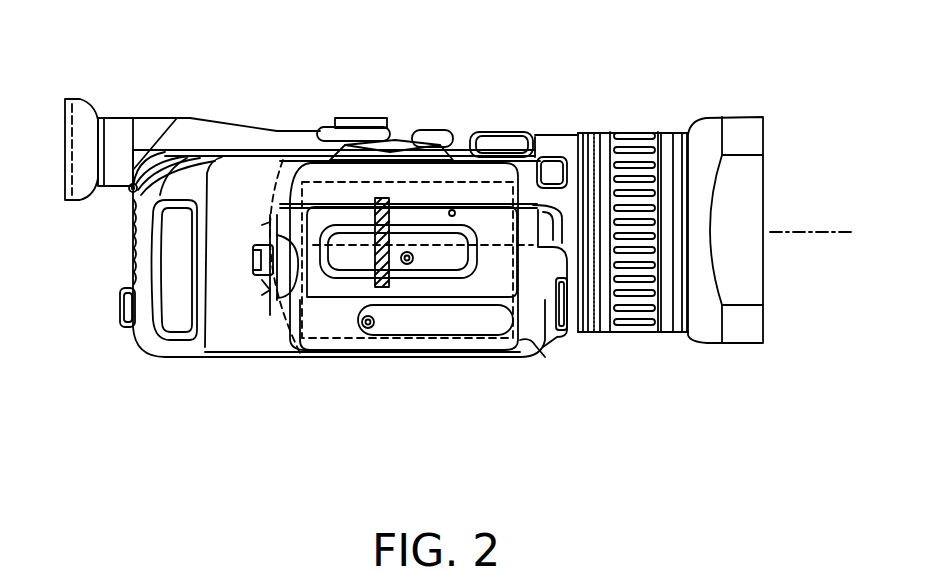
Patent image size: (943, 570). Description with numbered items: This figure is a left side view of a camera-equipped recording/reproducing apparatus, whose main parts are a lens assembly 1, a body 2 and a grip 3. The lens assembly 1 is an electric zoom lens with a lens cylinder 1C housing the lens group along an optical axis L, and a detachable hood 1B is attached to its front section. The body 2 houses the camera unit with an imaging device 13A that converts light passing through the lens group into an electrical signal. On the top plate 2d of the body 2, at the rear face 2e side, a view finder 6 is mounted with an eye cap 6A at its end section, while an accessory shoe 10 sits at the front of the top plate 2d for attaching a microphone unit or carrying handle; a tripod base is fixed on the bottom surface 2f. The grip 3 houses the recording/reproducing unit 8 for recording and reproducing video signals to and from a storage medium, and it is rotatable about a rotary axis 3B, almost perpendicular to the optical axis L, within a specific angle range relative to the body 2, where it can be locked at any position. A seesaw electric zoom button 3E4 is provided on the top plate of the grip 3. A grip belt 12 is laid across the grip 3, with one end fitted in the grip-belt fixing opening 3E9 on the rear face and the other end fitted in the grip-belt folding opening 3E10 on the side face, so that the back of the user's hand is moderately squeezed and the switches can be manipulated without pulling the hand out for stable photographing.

The lens assembly 1 is at (646, 80).
The detachable hood 1B is at (703, 123).
The lens cylinder 1C is at (563, 137).
The body 2 is at (245, 375).
The top plate 2d is at (289, 131).
The rear face 2e is at (131, 270).
The bottom surface 2f is at (490, 358).
The grip 3 is at (342, 375).
The rotary axis 3B is at (413, 265).
The seesaw electric zoom button 3E4 is at (413, 128).
The grip-belt fixing opening 3E9 is at (297, 313).
The grip-belt folding opening 3E10 is at (565, 310).
The view finder 6 is at (147, 128).
The eye cap 6A is at (83, 99).
The recording/reproducing unit 8 is at (328, 340).
The accessory shoe 10 is at (358, 118).
The grip belt 12 is at (553, 335).
The imaging device 13A is at (390, 265).
The optical axis L is at (848, 240).